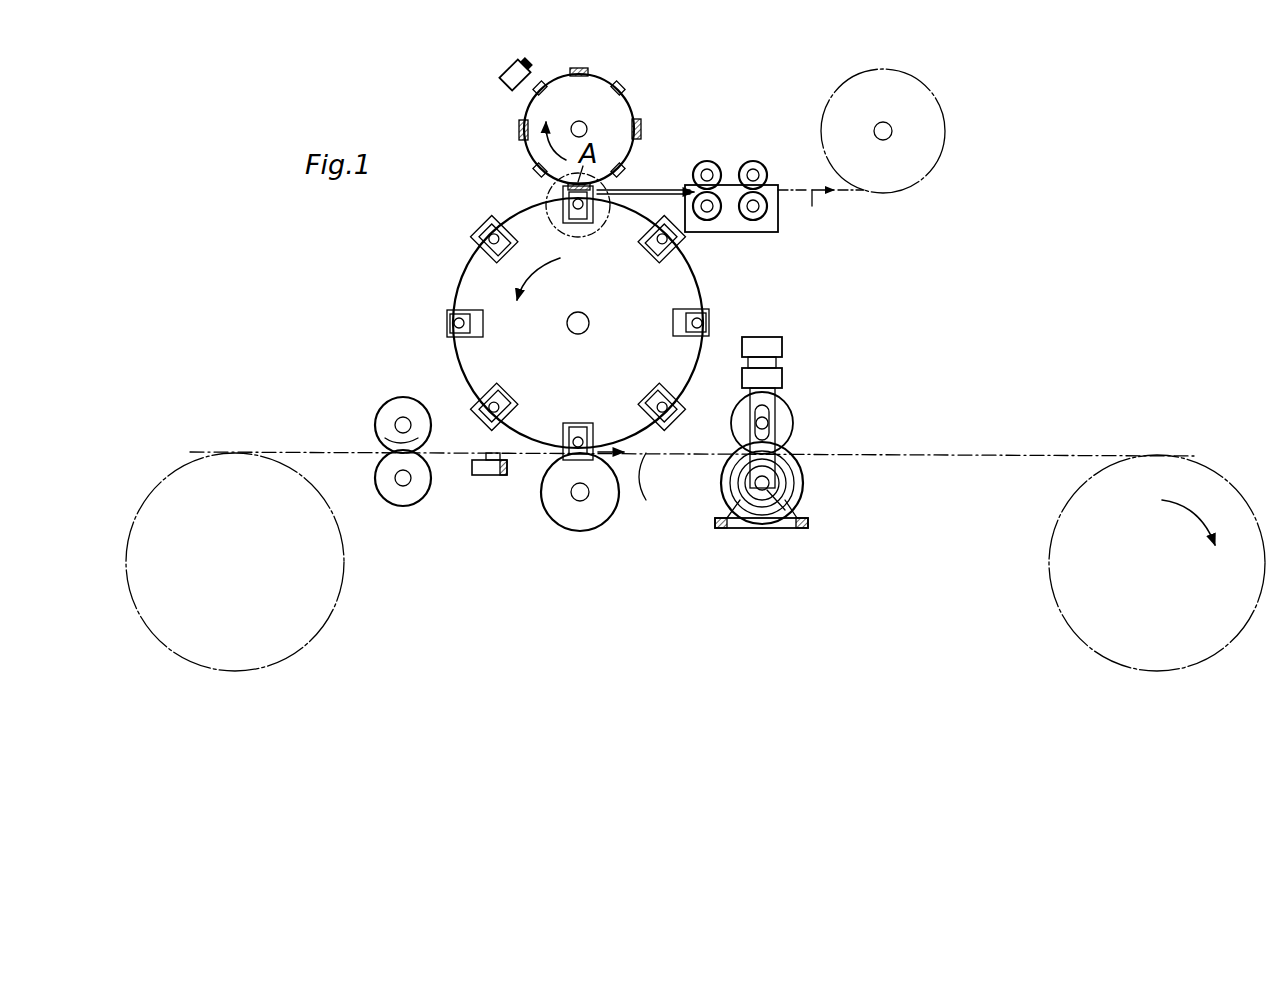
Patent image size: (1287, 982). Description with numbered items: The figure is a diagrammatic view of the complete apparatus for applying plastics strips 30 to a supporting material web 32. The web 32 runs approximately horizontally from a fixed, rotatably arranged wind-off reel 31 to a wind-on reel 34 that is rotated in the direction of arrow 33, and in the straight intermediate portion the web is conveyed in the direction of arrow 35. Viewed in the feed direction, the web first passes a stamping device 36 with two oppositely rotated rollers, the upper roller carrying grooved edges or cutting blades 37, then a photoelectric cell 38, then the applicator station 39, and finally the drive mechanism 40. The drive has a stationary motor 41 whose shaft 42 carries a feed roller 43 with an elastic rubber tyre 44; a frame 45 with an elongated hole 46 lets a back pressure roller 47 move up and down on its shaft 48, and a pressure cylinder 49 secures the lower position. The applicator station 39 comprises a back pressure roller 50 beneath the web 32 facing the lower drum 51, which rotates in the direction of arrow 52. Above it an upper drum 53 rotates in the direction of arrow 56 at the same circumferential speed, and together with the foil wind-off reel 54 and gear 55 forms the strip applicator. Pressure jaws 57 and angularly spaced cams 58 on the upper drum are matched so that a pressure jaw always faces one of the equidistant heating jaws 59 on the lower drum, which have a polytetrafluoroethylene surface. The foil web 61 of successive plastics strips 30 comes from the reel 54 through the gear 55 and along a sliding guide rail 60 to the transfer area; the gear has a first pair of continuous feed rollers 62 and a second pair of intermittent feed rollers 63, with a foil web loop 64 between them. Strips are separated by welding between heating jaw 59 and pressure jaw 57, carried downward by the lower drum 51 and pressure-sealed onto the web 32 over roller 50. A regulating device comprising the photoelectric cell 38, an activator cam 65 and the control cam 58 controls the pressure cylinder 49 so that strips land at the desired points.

The plastics strip 30 is at (488, 229).
The wind-off reel 31 is at (330, 590).
The supporting material web 32 is at (332, 452).
The arrow 33 is at (1190, 515).
The wind-on reel 34 is at (1070, 600).
The arrow 35 is at (642, 470).
The stamping device 36 is at (382, 425).
The cutting blades 37 is at (385, 409).
The photoelectric cell 38 is at (486, 476).
The applicator station 39 is at (535, 482).
The drive mechanism 40 is at (789, 425).
The motor 41 is at (728, 530).
The shaft 42 is at (785, 530).
The feed roller 43 is at (780, 485).
The rubber tyre 44 is at (790, 500).
The frame 45 is at (752, 446).
The elongated hole 46 is at (768, 435).
The back pressure roller 47 is at (794, 425).
The shaft 48 is at (770, 410).
The pressure cylinder 49 is at (783, 372).
The back pressure roller 50 is at (580, 520).
The lower drum 51 is at (480, 355).
The arrow 52 is at (508, 283).
The upper drum 53 is at (583, 84).
The foil wind-off reel 54 is at (920, 92).
The gear 55 is at (729, 165).
The arrow 56 is at (555, 150).
The pressure jaw 57 is at (572, 70).
The cam 58 is at (619, 86).
The heating jaw 59 is at (452, 312).
The sliding guide rail 60 is at (660, 200).
The foil web 61 is at (814, 196).
The first pair of feed rollers 62 is at (770, 195).
The second pair of feed rollers 63 is at (690, 200).
The foil web loop 64 is at (730, 218).
The activator cam 65 is at (500, 78).